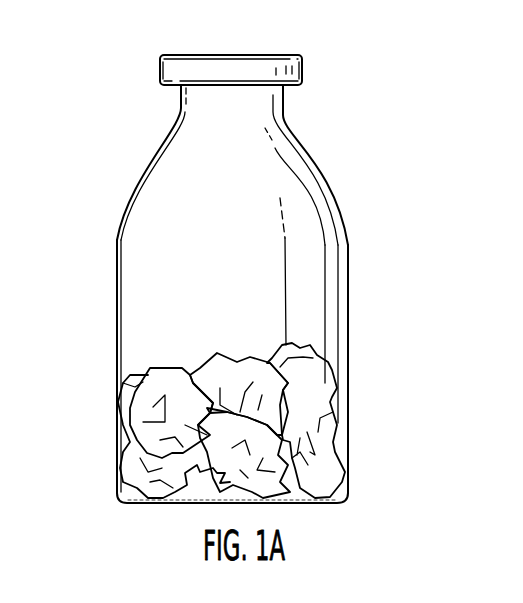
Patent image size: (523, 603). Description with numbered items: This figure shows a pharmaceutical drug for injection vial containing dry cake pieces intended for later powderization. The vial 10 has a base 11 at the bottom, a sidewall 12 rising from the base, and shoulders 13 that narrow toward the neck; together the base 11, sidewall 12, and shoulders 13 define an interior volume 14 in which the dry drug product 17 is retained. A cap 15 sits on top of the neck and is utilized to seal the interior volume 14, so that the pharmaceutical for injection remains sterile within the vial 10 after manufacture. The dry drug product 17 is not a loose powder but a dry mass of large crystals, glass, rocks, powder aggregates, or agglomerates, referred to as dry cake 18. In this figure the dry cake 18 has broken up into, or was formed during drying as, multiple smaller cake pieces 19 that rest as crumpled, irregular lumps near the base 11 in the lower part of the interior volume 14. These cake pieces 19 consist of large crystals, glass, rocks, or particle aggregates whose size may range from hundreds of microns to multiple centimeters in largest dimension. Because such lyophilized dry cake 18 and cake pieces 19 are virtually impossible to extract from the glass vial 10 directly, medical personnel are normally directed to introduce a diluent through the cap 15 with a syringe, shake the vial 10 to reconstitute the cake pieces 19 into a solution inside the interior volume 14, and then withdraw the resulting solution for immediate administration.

The vial 10 is at (244, 273).
The base 11 is at (132, 530).
The sidewall 12 is at (116, 243).
The shoulders 13 is at (153, 162).
The interior volume 14 is at (133, 218).
The cap 15 is at (282, 25).
The dry drug product 17 is at (407, 200).
The dry cake 18 is at (378, 304).
The cake pieces 19 is at (315, 468).